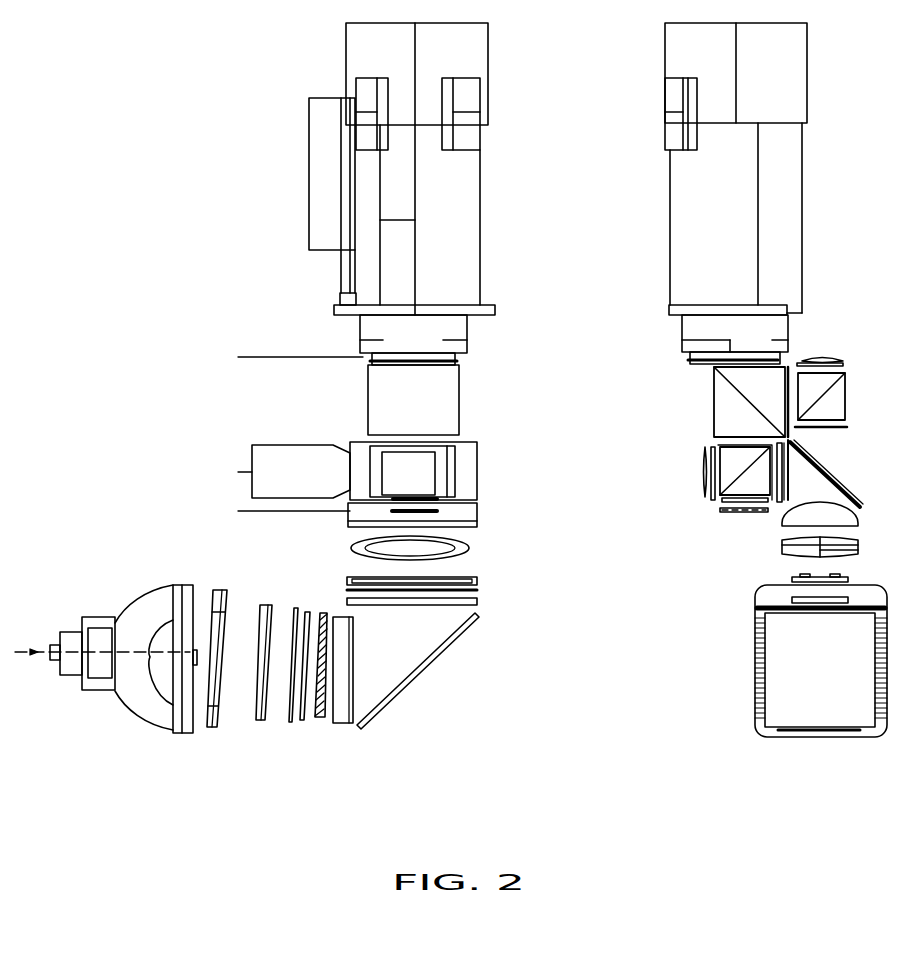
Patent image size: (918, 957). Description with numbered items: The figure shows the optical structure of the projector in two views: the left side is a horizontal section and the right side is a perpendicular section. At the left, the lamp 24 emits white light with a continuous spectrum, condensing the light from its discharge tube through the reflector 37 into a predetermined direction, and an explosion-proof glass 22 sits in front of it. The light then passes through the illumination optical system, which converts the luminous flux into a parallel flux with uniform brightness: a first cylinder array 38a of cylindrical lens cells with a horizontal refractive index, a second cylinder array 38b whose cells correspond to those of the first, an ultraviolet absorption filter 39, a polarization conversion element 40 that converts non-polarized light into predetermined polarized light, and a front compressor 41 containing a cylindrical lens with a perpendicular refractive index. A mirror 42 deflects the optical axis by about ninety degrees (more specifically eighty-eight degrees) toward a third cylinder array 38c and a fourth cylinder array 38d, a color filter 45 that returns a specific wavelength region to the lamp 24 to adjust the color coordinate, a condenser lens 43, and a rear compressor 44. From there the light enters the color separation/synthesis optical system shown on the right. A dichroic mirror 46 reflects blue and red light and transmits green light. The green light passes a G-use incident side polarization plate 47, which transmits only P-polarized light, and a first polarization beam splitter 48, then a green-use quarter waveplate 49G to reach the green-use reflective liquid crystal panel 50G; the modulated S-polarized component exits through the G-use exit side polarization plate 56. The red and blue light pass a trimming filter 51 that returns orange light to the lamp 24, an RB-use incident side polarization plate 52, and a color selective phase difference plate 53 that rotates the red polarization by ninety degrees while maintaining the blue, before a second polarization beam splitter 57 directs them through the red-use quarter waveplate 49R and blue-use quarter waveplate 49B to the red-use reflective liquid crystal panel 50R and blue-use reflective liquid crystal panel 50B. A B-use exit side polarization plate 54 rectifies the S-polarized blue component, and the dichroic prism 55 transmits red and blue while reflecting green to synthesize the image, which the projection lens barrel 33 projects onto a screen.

The explosion-proof glass 22 is at (212, 728).
The lamp 24 is at (106, 670).
The projection lens barrel 33 is at (738, 207).
The reflector 37 is at (143, 714).
The first cylinder array 38a is at (258, 722).
The second cylinder array 38b is at (305, 722).
The third cylinder array 38c is at (478, 603).
The fourth cylinder array 38d is at (478, 582).
The ultraviolet absorption filter 39 is at (292, 725).
The polarization conversion element 40 is at (322, 717).
The front compressor 41 is at (346, 722).
The mirror 42 is at (404, 683).
The condenser lens 43 is at (476, 546).
The rear compressor 44 is at (475, 515).
The color filter 45 is at (478, 591).
The dichroic mirror 46 is at (856, 504).
The G-use incident side polarization plate 47 is at (848, 427).
The first polarization beam splitter 48 is at (847, 397).
The green-use quarter waveplate 49G is at (843, 364).
The green-use reflective liquid crystal panel 50G is at (822, 357).
The blue-use quarter waveplate 49B is at (711, 502).
The blue-use reflective liquid crystal panel 50B is at (701, 460).
The red-use quarter waveplate 49R is at (722, 501).
The red-use reflective liquid crystal panel 50R is at (722, 512).
The trimming filter 51 is at (786, 503).
The RB-use incident side polarization plate 52 is at (776, 505).
The color selective phase difference plate 53 is at (776, 504).
The B-use exit side polarization plate 54 is at (720, 446).
The dichroic prism 55 is at (722, 398).
The G-use exit side polarization plate 56 is at (786, 368).
The second polarization beam splitter 57 is at (733, 457).